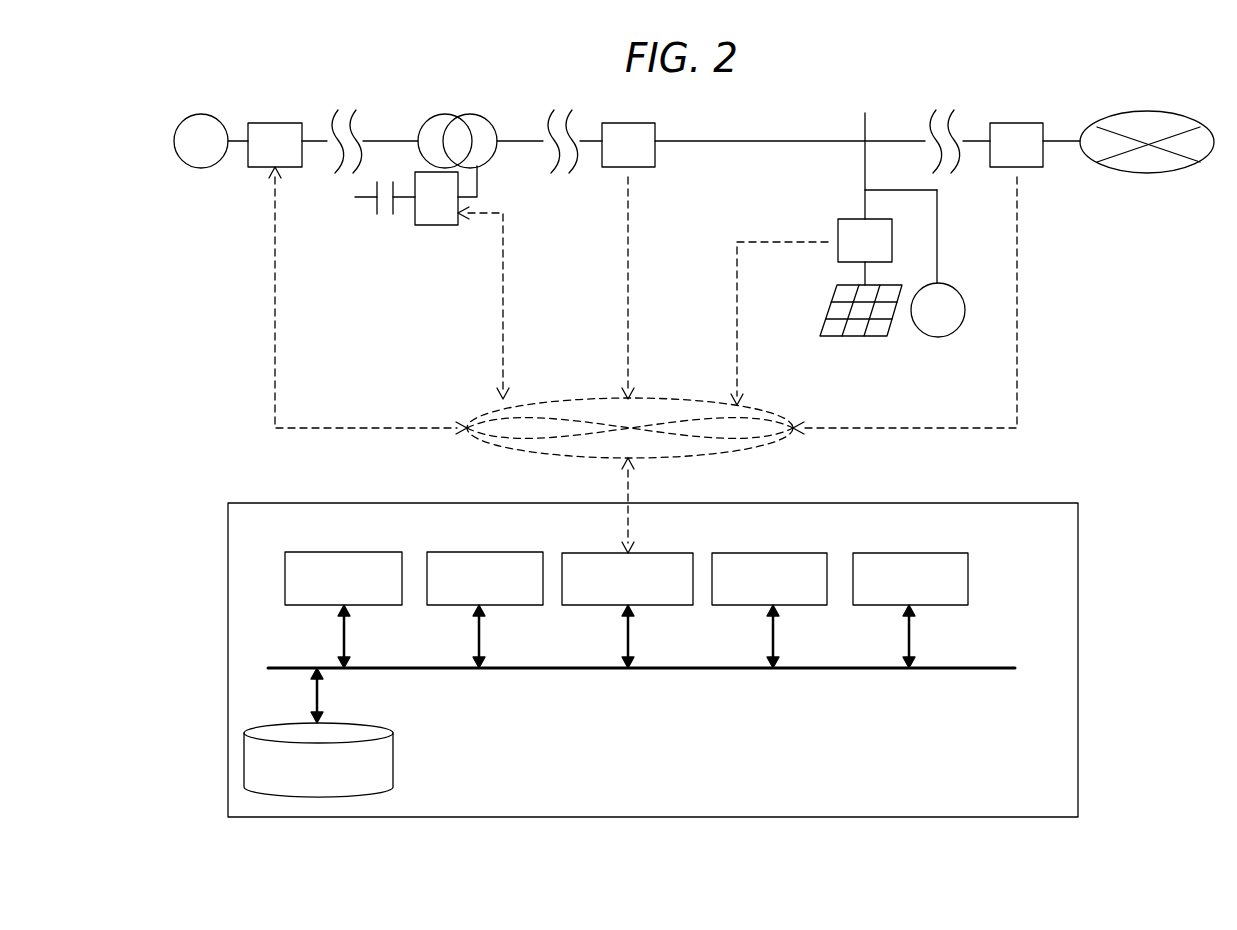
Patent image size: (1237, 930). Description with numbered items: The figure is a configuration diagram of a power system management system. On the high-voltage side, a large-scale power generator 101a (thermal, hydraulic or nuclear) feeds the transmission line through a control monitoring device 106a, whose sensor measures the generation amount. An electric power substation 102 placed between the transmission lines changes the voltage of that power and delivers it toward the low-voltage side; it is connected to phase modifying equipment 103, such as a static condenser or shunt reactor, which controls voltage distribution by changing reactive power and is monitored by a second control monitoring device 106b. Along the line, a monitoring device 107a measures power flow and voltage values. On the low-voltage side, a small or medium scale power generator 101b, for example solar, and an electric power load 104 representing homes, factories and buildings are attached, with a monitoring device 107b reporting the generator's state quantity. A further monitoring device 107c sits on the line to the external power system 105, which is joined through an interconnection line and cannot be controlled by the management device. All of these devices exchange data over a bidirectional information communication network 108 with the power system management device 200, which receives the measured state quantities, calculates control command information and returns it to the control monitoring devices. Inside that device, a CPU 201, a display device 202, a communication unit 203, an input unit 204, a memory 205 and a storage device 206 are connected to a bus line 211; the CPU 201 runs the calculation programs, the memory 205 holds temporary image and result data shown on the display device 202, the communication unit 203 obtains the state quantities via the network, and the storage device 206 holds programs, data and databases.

The power generator 101a is at (201, 170).
The control monitoring device 106a is at (275, 126).
The electric power substation 102 is at (481, 113).
The phase modifying equipment 103 is at (380, 222).
The control monitoring device 106b is at (430, 228).
The monitoring device 107a is at (650, 170).
The monitoring device 107b is at (838, 217).
The monitoring device 107c is at (1018, 124).
The external power system 105 is at (1085, 170).
The power generator 101b is at (870, 341).
The electric power load 104 is at (940, 340).
The information communication network 108 is at (496, 450).
The power system management device 200 is at (227, 510).
The central processing unit 201 is at (318, 618).
The display device 202 is at (452, 618).
The communication unit 203 is at (588, 618).
The input unit 204 is at (748, 618).
The memory 205 is at (884, 618).
The storage device 206 is at (286, 716).
The bus line 211 is at (1006, 660).